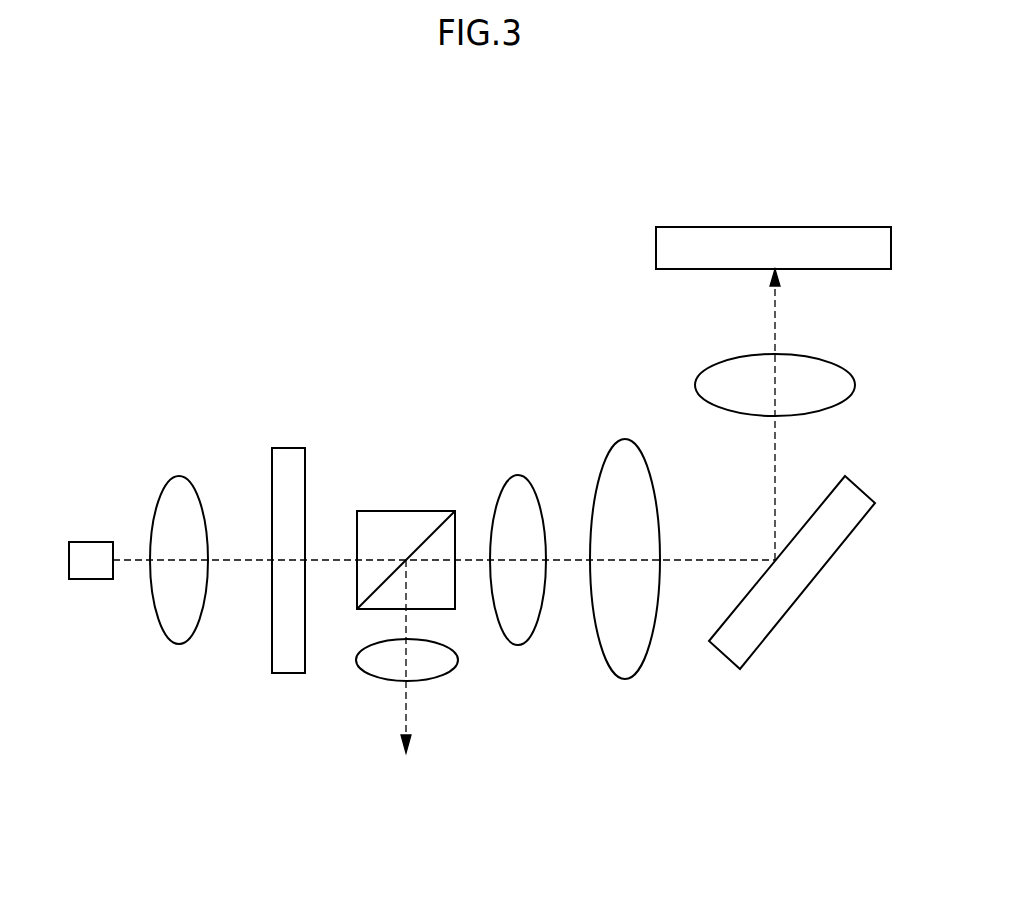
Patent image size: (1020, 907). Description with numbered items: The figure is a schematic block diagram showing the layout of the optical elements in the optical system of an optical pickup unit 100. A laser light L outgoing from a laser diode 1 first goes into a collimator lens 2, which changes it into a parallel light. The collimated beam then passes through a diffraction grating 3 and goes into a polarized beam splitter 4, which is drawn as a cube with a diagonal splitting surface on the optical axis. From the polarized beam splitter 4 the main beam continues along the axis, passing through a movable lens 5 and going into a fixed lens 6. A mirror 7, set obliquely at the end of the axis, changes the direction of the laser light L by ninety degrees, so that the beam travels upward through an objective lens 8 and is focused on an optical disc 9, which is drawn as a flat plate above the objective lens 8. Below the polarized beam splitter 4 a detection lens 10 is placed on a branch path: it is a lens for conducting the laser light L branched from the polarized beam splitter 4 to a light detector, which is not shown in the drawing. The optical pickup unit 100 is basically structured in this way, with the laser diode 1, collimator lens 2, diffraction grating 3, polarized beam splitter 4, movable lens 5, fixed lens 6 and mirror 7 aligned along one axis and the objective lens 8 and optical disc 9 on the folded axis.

The optical pickup unit 100 is at (194, 263).
The laser diode 1 is at (90, 579).
The laser light L is at (236, 558).
The collimator lens 2 is at (179, 644).
The diffraction grating 3 is at (288, 447).
The polarized beam splitter 4 is at (400, 511).
The movable lens 5 is at (519, 475).
The fixed lens 6 is at (623, 439).
The mirror 7 is at (803, 597).
The objective lens 8 is at (710, 363).
The optical disc 9 is at (656, 246).
The detection lens 10 is at (457, 660).